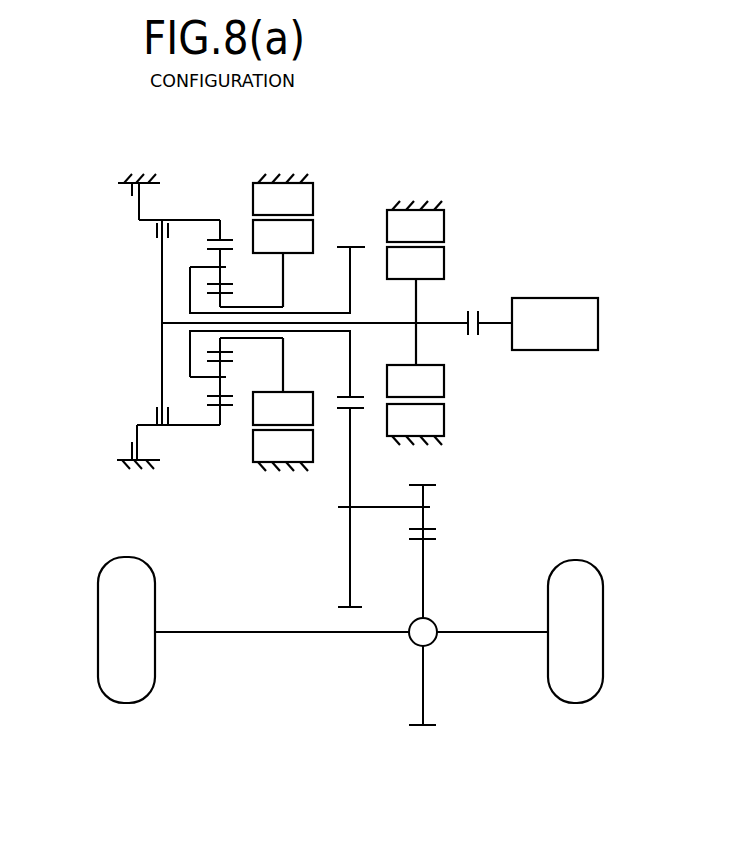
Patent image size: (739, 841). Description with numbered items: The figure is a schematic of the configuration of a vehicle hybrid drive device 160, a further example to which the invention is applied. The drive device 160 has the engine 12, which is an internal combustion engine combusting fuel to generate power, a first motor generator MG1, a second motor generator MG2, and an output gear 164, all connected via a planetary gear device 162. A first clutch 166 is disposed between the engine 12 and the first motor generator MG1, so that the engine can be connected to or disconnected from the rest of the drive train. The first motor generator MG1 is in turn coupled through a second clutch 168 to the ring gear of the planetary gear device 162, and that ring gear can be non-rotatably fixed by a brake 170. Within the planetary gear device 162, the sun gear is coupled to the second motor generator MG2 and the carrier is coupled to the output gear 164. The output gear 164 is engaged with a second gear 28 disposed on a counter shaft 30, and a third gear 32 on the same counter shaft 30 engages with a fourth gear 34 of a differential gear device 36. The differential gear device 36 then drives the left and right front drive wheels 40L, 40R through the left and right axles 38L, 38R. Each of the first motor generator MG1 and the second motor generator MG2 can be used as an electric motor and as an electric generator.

The vehicle hybrid drive device 160 is at (541, 147).
The planetary gear device 162 is at (221, 204).
The output gear 164 is at (351, 245).
The first clutch 166 is at (475, 295).
The second clutch 168 is at (142, 238).
The brake 170 is at (124, 193).
The engine 12 is at (563, 306).
The second gear 28 is at (355, 607).
The counter shaft 30 is at (371, 505).
The third gear 32 is at (428, 484).
The fourth gear 34 is at (428, 728).
The differential gear device 36 is at (415, 638).
The left axle 38L is at (214, 635).
The right axle 38R is at (490, 635).
The left front drive wheel 40L is at (124, 686).
The right front drive wheel 40R is at (573, 686).
The first motor generator MG1 is at (459, 216).
The second motor generator MG2 is at (326, 196).